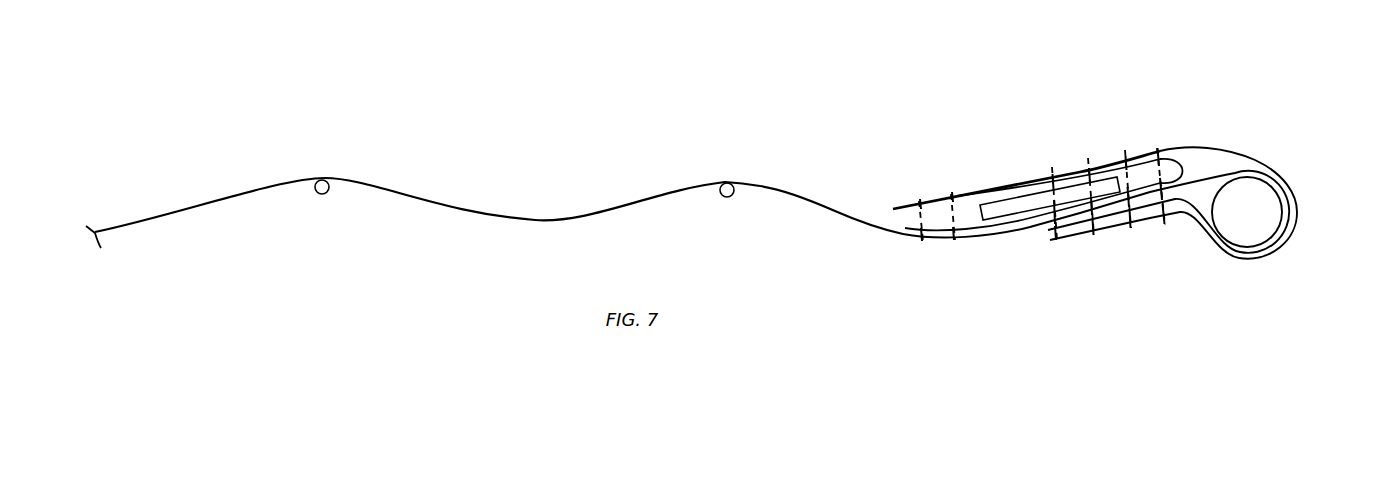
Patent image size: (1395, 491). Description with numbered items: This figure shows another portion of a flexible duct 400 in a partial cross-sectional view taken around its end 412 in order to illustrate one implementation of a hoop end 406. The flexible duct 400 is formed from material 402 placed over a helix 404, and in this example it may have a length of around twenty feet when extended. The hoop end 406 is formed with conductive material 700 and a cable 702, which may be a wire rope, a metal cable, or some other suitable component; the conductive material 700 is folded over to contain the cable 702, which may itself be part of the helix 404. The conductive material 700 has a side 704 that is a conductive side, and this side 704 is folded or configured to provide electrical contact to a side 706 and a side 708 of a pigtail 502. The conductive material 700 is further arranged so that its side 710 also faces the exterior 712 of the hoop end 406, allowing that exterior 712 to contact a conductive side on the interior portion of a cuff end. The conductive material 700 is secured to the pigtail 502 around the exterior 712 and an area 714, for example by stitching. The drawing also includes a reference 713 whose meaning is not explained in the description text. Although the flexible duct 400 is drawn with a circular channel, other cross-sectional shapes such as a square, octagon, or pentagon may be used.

The flexible duct 400 is at (898, 83).
The material 402 is at (528, 217).
The helix 404 is at (726, 197).
The side 704 is at (791, 192).
The conductive trace 713 is at (966, 197).
The side 706 is at (972, 210).
The side 708 is at (1005, 232).
The pigtail 502 is at (1022, 210).
The exterior 712 is at (1068, 173).
The area 714 is at (1135, 153).
The end 412 is at (1320, 254).
The conductive material 700 is at (1220, 149).
The hoop end 406 is at (1241, 259).
The side 710 is at (1300, 208).
The cable 702 is at (1257, 190).